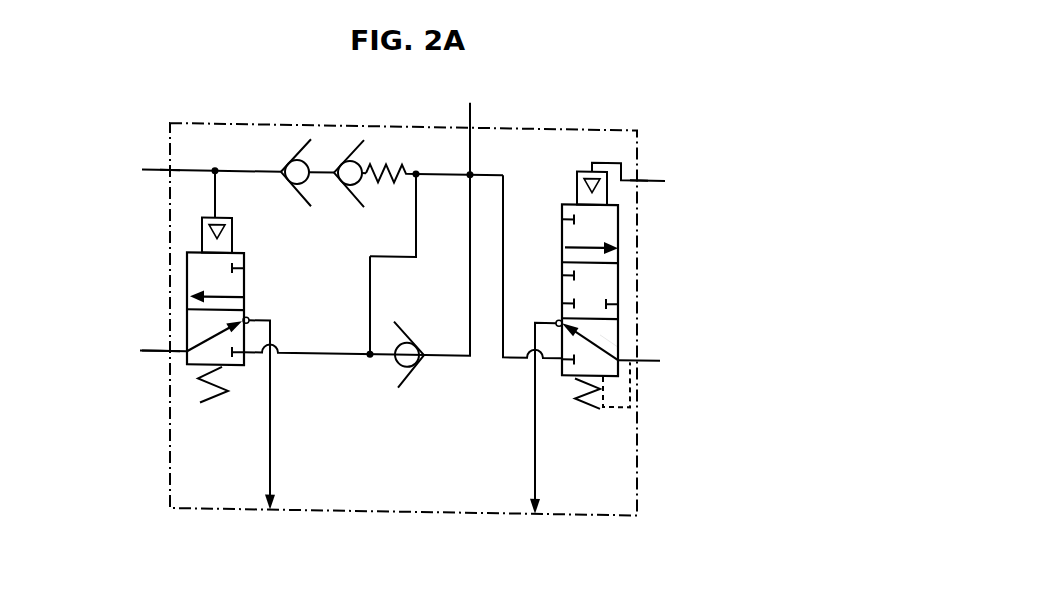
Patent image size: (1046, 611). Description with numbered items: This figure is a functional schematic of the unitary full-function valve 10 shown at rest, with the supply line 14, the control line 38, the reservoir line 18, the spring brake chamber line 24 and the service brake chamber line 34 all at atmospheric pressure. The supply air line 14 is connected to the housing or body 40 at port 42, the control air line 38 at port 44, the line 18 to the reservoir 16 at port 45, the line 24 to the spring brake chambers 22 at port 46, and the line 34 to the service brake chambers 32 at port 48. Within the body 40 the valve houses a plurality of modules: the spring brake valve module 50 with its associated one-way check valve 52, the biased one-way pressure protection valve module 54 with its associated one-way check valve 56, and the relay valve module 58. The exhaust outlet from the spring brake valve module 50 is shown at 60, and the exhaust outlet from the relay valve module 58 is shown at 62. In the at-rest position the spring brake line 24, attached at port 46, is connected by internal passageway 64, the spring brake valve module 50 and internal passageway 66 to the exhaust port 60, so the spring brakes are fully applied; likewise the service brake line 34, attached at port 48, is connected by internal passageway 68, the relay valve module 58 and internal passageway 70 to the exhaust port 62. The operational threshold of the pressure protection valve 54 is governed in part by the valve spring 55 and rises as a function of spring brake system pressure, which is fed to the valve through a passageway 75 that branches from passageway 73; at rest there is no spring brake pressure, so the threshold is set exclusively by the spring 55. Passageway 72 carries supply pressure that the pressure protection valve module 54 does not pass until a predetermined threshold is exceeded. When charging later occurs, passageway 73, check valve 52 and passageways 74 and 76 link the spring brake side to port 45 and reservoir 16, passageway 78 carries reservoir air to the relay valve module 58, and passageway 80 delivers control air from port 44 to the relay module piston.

The unitary full-function valve 10 is at (165, 497).
The supply line 14 is at (142, 172).
The reservoir 16 is at (505, 72).
The reservoir line 18 is at (468, 98).
The spring brake chambers 22 is at (106, 406).
The spring brake chamber line 24 is at (170, 348).
The service brake chambers 32 is at (769, 378).
The service brake chamber line 34 is at (650, 355).
The control line 38 is at (665, 175).
The housing or body 40 is at (268, 123).
The port 42 is at (166, 178).
The port 44 is at (640, 178).
The port 45 is at (472, 126).
The port 46 is at (168, 345).
The port 48 is at (640, 370).
The spring brake valve module 50 is at (247, 285).
The one-way check valve 52 is at (410, 385).
The biased one-way pressure protection valve module 54 is at (347, 200).
The valve spring 55 is at (374, 162).
The one-way check valve 56 is at (292, 200).
The relay valve module 58 is at (560, 252).
The exhaust outlet 60 is at (278, 512).
The exhaust outlet 62 is at (540, 514).
The internal passageway 64 is at (167, 360).
The internal passageway 66 is at (272, 428).
The internal passageway 68 is at (636, 320).
The internal passageway 70 is at (533, 425).
The line 72 is at (236, 178).
The internal passageway 73 is at (286, 356).
The internal passageway 74 is at (418, 268).
The passageway 75 is at (368, 298).
The passageway 76 is at (470, 166).
The passageway 78 is at (504, 302).
The passageway 80 is at (628, 146).